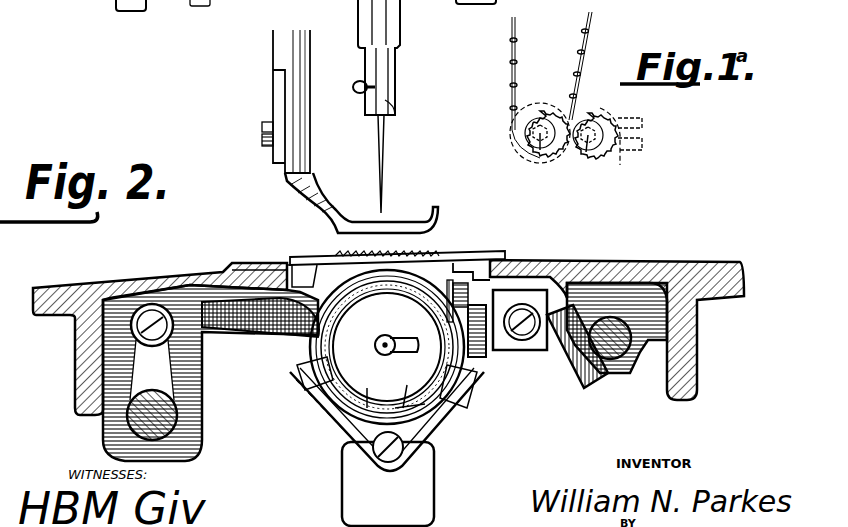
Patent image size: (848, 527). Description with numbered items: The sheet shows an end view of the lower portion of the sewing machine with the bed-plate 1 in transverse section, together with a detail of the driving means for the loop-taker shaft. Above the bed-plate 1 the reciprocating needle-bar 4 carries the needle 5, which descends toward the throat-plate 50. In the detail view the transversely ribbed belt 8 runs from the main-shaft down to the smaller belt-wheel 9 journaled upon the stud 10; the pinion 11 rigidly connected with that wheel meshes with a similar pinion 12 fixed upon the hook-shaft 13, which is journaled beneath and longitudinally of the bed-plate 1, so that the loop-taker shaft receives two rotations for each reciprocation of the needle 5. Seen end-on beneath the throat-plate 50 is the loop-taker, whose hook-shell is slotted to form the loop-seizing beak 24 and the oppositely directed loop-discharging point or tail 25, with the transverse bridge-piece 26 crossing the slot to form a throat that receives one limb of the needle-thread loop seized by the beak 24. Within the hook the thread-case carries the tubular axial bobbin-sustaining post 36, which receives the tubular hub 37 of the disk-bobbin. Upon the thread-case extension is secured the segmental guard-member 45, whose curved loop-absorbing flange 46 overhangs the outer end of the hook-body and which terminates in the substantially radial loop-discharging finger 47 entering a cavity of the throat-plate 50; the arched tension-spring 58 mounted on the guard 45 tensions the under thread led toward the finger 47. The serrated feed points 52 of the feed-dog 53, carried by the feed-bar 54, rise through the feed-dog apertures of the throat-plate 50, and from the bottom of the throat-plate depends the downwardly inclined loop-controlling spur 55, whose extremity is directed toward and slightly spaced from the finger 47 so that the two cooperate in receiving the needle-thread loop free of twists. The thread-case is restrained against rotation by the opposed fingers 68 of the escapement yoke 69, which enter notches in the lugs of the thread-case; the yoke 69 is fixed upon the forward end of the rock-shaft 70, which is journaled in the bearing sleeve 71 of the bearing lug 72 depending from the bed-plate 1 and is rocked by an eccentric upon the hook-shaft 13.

In FIG. 2, the bed-plate 1 is at (133, 280).
In FIG. 2, the needle-bar 4 is at (395, 72).
In FIG. 2, the needle 5 is at (387, 170).
In FIG. 1A, the belt 8 is at (511, 85).
In FIG. 1A, the belt-wheel 9 is at (539, 110).
In FIG. 1A, the stud 10 is at (541, 152).
In FIG. 1A, the pinion 11 is at (522, 142).
In FIG. 1A, the pinion 12 is at (607, 158).
In FIG. 1A, the hook-shaft 13 is at (585, 153).
In FIG. 2, the loop-seizing beak 24 is at (365, 386).
In FIG. 2, the loop-discharging point or tail 25 is at (412, 383).
In FIG. 2, the bridge-piece 26 is at (340, 410).
In FIG. 2, the bobbin-sustaining post 36 is at (394, 341).
In FIG. 2, the hub 37 is at (387, 347).
In FIG. 2, the guard-member 45 is at (445, 402).
In FIG. 2, the loop-absorbing flange 46 is at (480, 376).
In FIG. 2, the loop-discharging finger 47 is at (410, 251).
In FIG. 2, the throat-plate 50 is at (266, 263).
In FIG. 2, the feed points 52 is at (345, 252).
In FIG. 2, the feed-dog 53 is at (318, 275).
In FIG. 2, the feed-bar 54 is at (250, 322).
In FIG. 2, the loop-controlling spur 55 is at (468, 292).
In FIG. 2, the tension-spring 58 is at (387, 320).
In FIG. 2, the fingers 68 is at (305, 355).
In FIG. 2, the escapement yoke 69 is at (370, 418).
In FIG. 2, the rock-shaft 70 is at (400, 462).
In FIG. 2, the bearing sleeve 71 is at (292, 10).
In FIG. 2, the bearing lug 72 is at (388, 484).